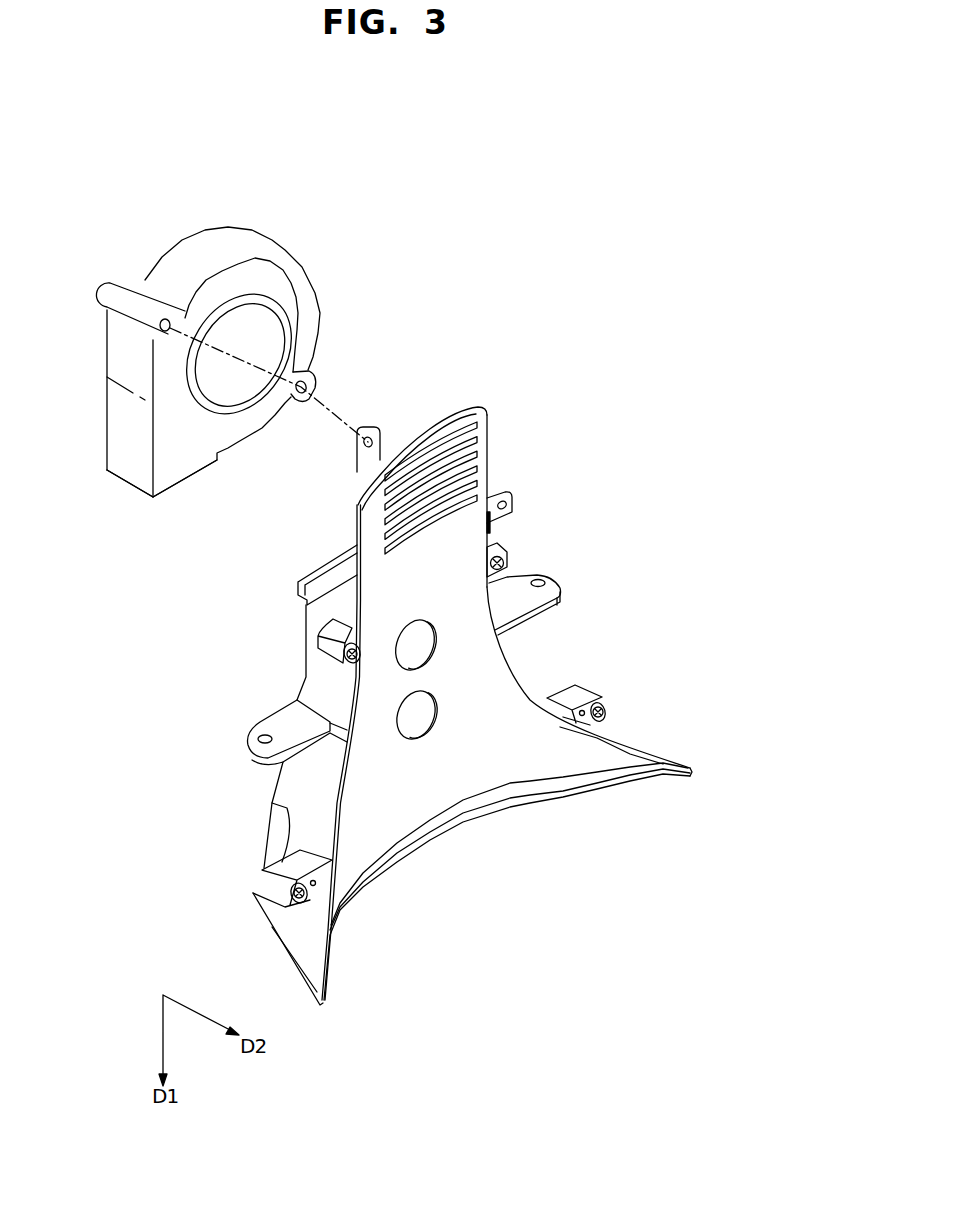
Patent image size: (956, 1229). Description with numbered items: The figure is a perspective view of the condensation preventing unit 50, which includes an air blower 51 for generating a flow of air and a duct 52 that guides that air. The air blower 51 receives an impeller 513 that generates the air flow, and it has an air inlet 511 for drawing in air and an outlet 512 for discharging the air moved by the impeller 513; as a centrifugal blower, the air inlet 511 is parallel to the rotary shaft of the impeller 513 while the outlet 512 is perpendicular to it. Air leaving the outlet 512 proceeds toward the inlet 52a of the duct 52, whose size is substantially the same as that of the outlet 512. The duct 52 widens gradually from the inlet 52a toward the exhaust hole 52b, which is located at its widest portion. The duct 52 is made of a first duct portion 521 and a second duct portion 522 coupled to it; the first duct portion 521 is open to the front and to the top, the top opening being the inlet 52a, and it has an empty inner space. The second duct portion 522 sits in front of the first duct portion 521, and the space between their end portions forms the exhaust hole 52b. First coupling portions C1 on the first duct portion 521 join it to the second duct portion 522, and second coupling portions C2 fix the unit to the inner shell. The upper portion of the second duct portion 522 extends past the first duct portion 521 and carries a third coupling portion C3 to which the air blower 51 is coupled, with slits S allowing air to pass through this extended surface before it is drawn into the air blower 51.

The condensation preventing unit 50 is at (576, 292).
The air blower 51 is at (172, 238).
The air inlet 511 is at (294, 300).
The outlet 512 is at (124, 480).
The impeller 513 is at (275, 338).
The duct 52 is at (480, 402).
The inlet 52a is at (337, 585).
The exhaust hole 52b is at (490, 798).
The first duct portion 521 is at (300, 790).
The second duct portion 522 is at (490, 678).
The slits S is at (470, 447).
The first coupling portions C1 is at (322, 639).
The second coupling portions C2 is at (556, 580).
The third coupling portion C3 is at (377, 428).